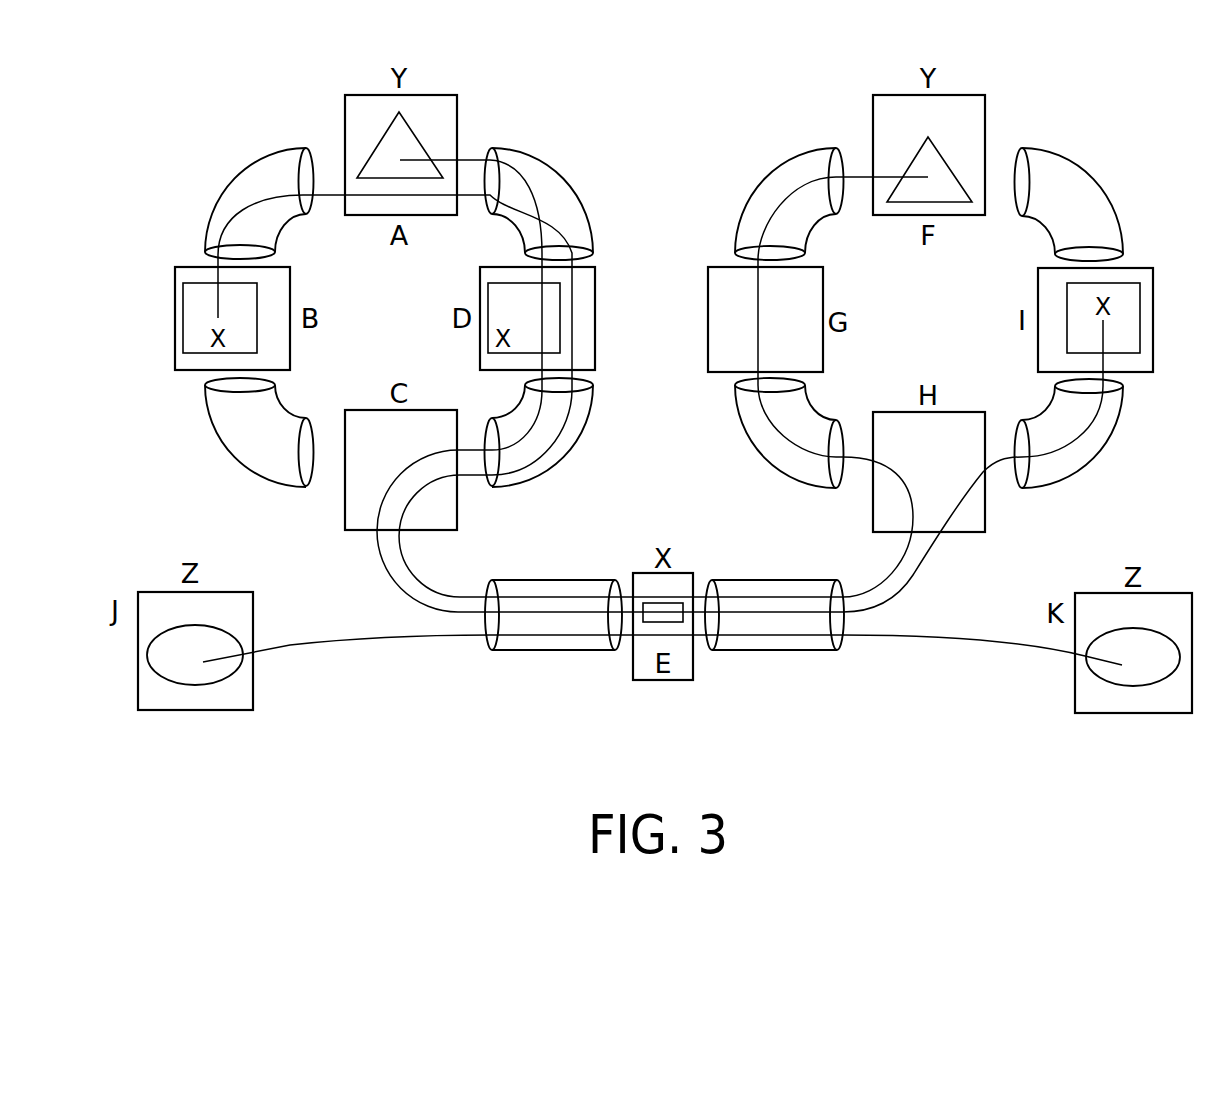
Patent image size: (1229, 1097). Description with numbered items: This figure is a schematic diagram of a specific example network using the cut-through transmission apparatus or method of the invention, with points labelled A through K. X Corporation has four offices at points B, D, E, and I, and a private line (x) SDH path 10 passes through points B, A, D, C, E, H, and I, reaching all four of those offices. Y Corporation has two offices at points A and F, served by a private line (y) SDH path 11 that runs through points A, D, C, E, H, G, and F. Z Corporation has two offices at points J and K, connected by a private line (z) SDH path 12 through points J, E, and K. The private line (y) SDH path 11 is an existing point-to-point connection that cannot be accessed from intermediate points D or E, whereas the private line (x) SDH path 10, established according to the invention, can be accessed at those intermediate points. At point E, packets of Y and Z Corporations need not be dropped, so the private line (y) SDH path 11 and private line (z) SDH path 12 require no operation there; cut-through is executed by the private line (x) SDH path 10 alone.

The private line (x) SDH path 10 is at (800, 612).
The private line (y) SDH path 11 is at (806, 447).
The private line (z) SDH path 12 is at (738, 637).